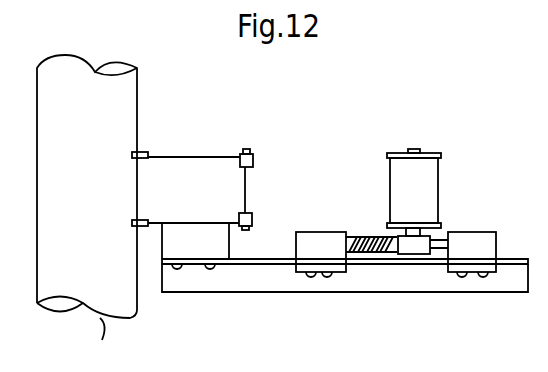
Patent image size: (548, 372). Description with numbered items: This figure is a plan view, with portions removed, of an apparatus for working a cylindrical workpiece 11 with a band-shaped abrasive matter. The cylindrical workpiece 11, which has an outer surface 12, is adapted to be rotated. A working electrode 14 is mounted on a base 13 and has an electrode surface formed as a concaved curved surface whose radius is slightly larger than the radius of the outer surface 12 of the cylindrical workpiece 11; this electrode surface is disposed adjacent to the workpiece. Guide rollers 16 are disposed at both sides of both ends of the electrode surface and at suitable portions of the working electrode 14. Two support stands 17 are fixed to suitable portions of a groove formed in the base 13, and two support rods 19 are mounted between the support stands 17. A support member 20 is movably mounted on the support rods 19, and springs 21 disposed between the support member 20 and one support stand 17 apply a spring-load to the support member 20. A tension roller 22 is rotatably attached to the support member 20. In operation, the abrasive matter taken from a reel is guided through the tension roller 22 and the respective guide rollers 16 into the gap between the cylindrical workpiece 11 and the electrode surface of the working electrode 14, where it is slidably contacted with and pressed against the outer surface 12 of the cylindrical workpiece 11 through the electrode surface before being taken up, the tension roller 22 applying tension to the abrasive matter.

The cylindrical workpiece 11 is at (101, 339).
The outer surface 12 is at (127, 93).
The base 13 is at (262, 288).
The working electrode 14 is at (215, 165).
The guide rollers 16 is at (148, 151).
The support stands 17 is at (315, 238).
The support rods 19 is at (441, 248).
The support member 20 is at (411, 254).
The springs 21 is at (366, 236).
The tension roller 22 is at (432, 172).